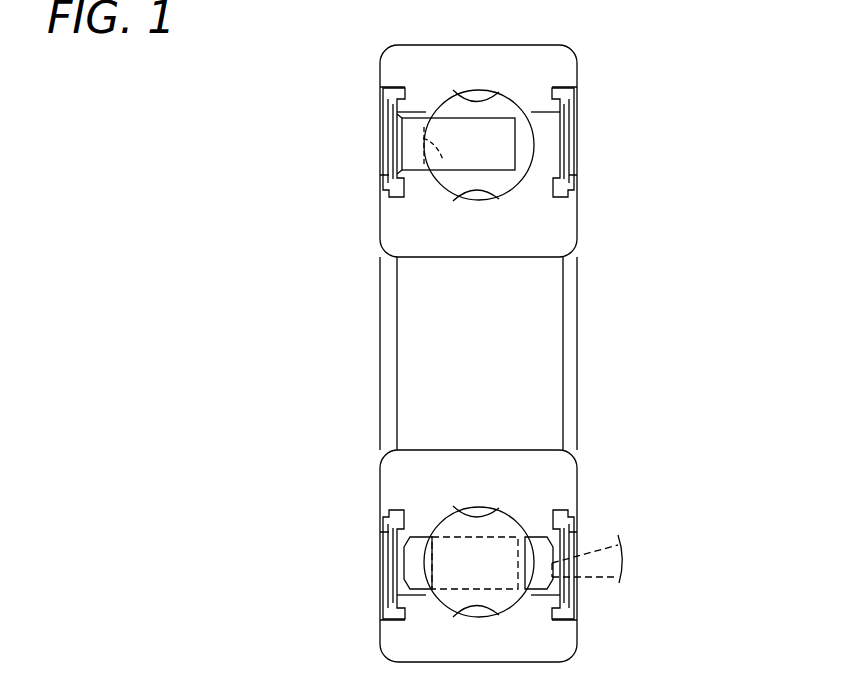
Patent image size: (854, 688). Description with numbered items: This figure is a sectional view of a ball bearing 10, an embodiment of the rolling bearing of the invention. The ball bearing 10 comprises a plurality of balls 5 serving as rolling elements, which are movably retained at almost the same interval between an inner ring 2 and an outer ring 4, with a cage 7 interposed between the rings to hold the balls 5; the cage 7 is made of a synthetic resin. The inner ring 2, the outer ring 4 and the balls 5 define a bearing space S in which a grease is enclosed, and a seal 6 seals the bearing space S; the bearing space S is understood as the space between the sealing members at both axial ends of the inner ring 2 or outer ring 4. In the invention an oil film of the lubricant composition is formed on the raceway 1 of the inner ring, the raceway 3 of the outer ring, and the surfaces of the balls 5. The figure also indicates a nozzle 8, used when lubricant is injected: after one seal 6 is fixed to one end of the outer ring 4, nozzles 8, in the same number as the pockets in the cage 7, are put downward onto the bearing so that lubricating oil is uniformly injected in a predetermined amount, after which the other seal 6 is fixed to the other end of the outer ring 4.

The ball bearing 10 is at (665, 124).
The raceway of the inner ring 1 is at (488, 186).
The inner ring 2 is at (408, 223).
The raceway of the outer ring 3 is at (490, 101).
The outer ring 4 is at (410, 75).
The ball 5 is at (520, 135).
The seal 6 is at (387, 131).
The cage 7 is at (423, 141).
The nozzle 8 is at (607, 562).
The bearing space S is at (548, 153).